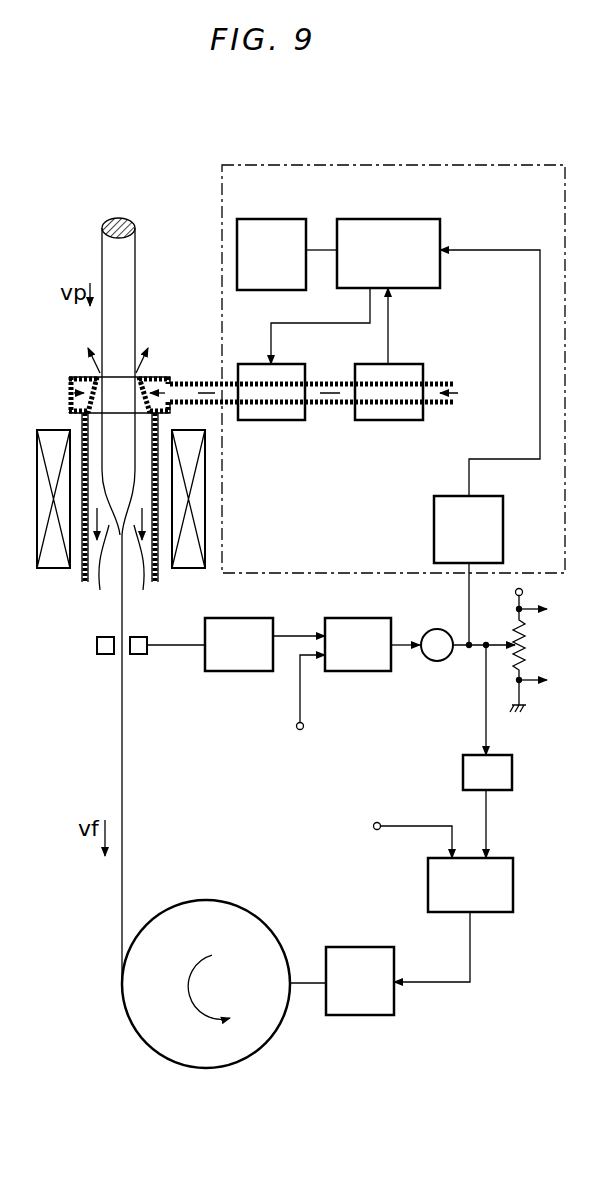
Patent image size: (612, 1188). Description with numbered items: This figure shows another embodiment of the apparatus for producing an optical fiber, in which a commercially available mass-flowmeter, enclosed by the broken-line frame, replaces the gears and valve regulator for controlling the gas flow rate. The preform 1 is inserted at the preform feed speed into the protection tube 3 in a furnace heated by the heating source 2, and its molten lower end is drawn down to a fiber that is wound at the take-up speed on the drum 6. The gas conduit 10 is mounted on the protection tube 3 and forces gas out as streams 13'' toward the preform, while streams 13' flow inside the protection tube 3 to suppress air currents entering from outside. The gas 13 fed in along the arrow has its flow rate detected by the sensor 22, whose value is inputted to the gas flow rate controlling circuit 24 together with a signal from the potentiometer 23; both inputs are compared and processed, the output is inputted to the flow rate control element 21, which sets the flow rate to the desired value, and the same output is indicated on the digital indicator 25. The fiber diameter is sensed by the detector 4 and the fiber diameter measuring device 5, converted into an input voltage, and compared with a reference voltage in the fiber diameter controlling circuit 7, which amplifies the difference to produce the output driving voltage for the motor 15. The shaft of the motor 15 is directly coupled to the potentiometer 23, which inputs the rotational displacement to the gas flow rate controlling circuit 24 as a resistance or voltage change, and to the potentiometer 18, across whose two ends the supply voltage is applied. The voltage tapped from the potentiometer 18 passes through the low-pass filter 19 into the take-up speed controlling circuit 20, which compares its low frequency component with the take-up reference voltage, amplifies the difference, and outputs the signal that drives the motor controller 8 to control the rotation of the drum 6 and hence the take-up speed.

The preform 1 is at (136, 268).
The heating source 2 is at (37, 502).
The protection tube 3 is at (82, 578).
The fiber detector 4 is at (105, 654).
The fiber diameter measuring device 5 is at (232, 671).
The drum 6 is at (247, 912).
The fiber diameter controlling circuit 7 is at (358, 671).
The motor controller 8 is at (363, 1015).
The gas conduit 10 is at (69, 378).
The gas 13 is at (338, 405).
The gas stream 13' is at (125, 564).
The gas stream 13'' is at (121, 344).
The motor 15 is at (437, 661).
The potentiometer 18 is at (528, 650).
The low-pass filter 19 is at (512, 773).
The take-up speed controlling circuit 20 is at (513, 887).
The flow rate control element 21 is at (288, 420).
The sensor 22 is at (405, 420).
The potentiometer 23 is at (434, 527).
The gas flow rate controlling circuit 24 is at (400, 219).
The digital indicator 25 is at (273, 219).